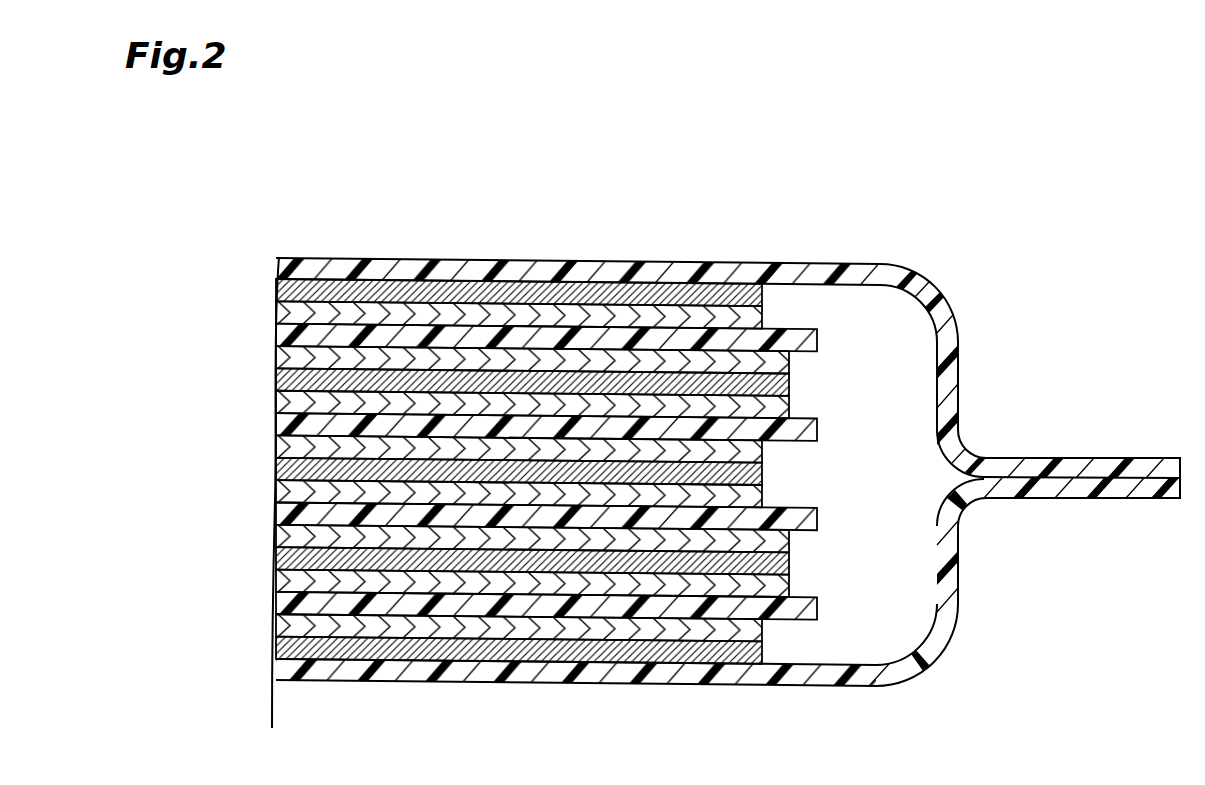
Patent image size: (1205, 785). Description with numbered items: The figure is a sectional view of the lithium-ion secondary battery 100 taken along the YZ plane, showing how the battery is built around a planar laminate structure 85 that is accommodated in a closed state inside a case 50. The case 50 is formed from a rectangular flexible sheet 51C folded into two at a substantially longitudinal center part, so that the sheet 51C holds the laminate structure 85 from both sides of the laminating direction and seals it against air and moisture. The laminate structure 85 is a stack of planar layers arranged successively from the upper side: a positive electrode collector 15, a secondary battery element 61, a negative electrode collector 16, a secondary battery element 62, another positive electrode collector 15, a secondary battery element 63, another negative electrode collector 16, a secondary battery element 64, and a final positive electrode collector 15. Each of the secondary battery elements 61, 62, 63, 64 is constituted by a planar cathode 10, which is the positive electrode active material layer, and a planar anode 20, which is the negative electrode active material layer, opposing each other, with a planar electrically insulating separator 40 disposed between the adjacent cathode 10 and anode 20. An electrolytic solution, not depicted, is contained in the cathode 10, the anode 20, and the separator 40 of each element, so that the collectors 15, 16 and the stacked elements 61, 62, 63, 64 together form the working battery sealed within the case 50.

The lithium-ion secondary battery 100 is at (762, 154).
The case 50 is at (776, 262).
The sheet 51C is at (403, 268).
The laminate structure 85 is at (119, 271).
The positive electrode collector 15 is at (277, 290).
The negative electrode collector 16 is at (277, 380).
The cathode 10 is at (277, 312).
The separator 40 is at (277, 335).
The anode 20 is at (277, 357).
The secondary battery element 61 is at (175, 298).
The secondary battery element 62 is at (175, 383).
The secondary battery element 63 is at (175, 477).
The secondary battery element 64 is at (175, 565).